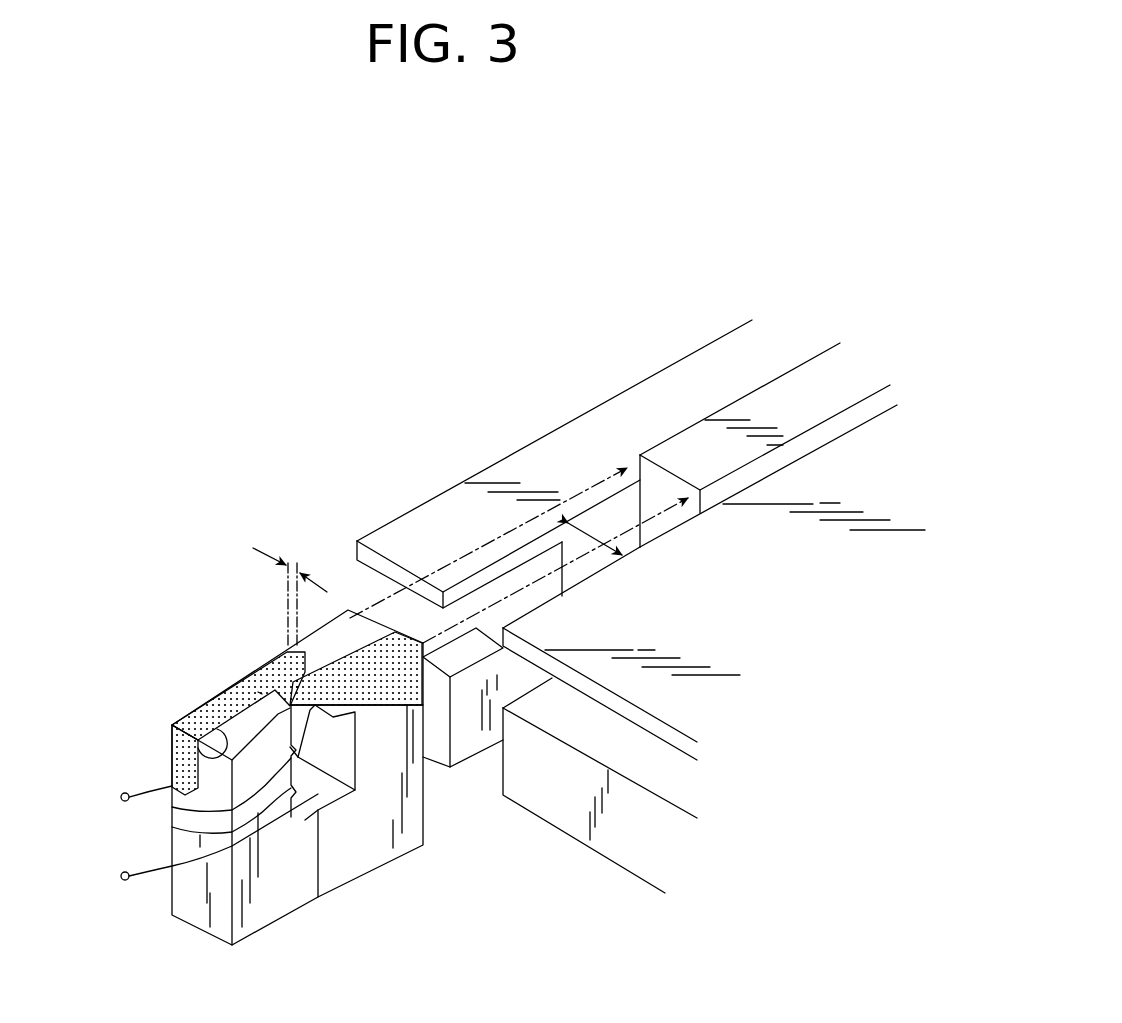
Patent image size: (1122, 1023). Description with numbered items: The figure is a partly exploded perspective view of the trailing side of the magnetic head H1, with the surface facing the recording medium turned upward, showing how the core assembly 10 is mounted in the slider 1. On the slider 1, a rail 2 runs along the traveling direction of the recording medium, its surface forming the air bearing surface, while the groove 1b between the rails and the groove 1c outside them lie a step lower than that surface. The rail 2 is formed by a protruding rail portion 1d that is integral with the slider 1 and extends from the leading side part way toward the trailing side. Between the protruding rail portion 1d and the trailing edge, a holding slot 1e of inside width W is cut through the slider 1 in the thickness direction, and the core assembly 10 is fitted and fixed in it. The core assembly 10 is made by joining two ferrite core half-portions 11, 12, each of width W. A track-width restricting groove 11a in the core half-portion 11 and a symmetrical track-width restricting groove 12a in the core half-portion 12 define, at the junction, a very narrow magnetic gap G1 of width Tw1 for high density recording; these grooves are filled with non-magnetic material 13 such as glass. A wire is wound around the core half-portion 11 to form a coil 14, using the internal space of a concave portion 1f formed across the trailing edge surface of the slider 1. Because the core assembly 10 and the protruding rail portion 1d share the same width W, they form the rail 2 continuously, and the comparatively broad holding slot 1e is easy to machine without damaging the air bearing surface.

The slider 1 is at (637, 609).
The groove 1b is at (705, 588).
The groove 1c is at (553, 450).
The protruding rail portion 1d is at (798, 420).
The holding slot 1e is at (668, 500).
The concave portion 1f is at (582, 742).
The rail 2 is at (785, 397).
The core assembly 10 is at (281, 746).
The core half-portion 11 is at (277, 898).
The track-width restricting groove 11a is at (172, 759).
The core half-portion 12 is at (350, 855).
The track-width restricting groove 12a is at (387, 688).
The non-magnetic material 13 is at (358, 648).
The coil 14 is at (178, 833).
The magnetic gap G1 is at (258, 692).
The track width of the magnetic gap Tw1 is at (290, 580).
The width W is at (599, 542).
The magnetic head H1 is at (565, 368).